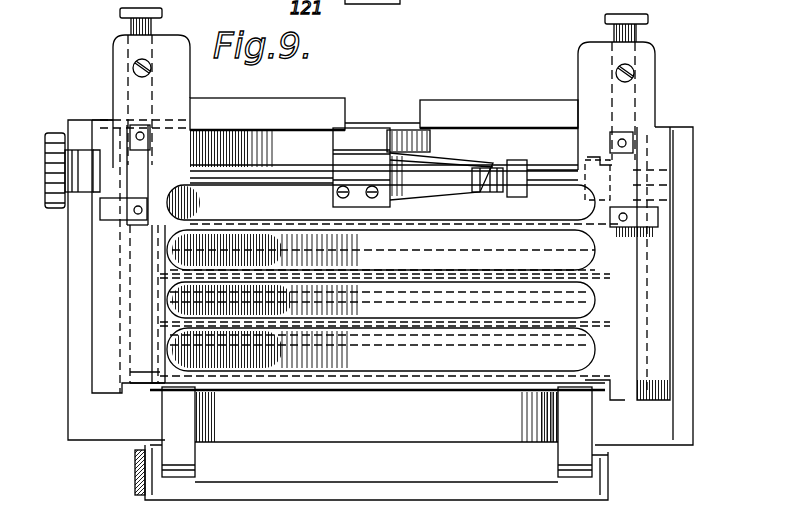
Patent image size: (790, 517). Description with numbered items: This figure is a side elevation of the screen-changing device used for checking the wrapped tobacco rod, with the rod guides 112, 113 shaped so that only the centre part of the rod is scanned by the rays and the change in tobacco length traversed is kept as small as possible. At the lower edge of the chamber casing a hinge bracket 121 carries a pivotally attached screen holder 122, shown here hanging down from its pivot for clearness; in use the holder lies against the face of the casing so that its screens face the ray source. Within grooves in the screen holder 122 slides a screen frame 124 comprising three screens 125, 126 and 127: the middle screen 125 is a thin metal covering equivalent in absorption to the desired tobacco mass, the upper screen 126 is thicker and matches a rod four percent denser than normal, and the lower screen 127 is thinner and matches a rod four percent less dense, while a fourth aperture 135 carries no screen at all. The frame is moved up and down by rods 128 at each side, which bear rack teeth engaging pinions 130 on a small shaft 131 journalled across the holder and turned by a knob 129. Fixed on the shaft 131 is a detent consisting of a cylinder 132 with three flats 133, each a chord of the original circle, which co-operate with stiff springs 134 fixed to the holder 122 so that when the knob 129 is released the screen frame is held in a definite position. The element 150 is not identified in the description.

The rod guide 112 is at (243, 268).
The rod guide 113 is at (258, 328).
The hinge bracket 121 is at (537, 490).
The screen holder 122 is at (410, 432).
The screen frame 124 is at (622, 312).
The screen 125 is at (492, 302).
The screen 126 is at (385, 260).
The screen 127 is at (385, 352).
The rod 128 is at (607, 31).
The knob 129 is at (58, 208).
The pinion 130 is at (128, 132).
The shaft 131 is at (257, 173).
The cylinder 132 is at (515, 197).
The flat 133 is at (500, 170).
The spring 134 is at (430, 170).
The aperture 135 is at (477, 192).
The stop block 150 is at (134, 485).